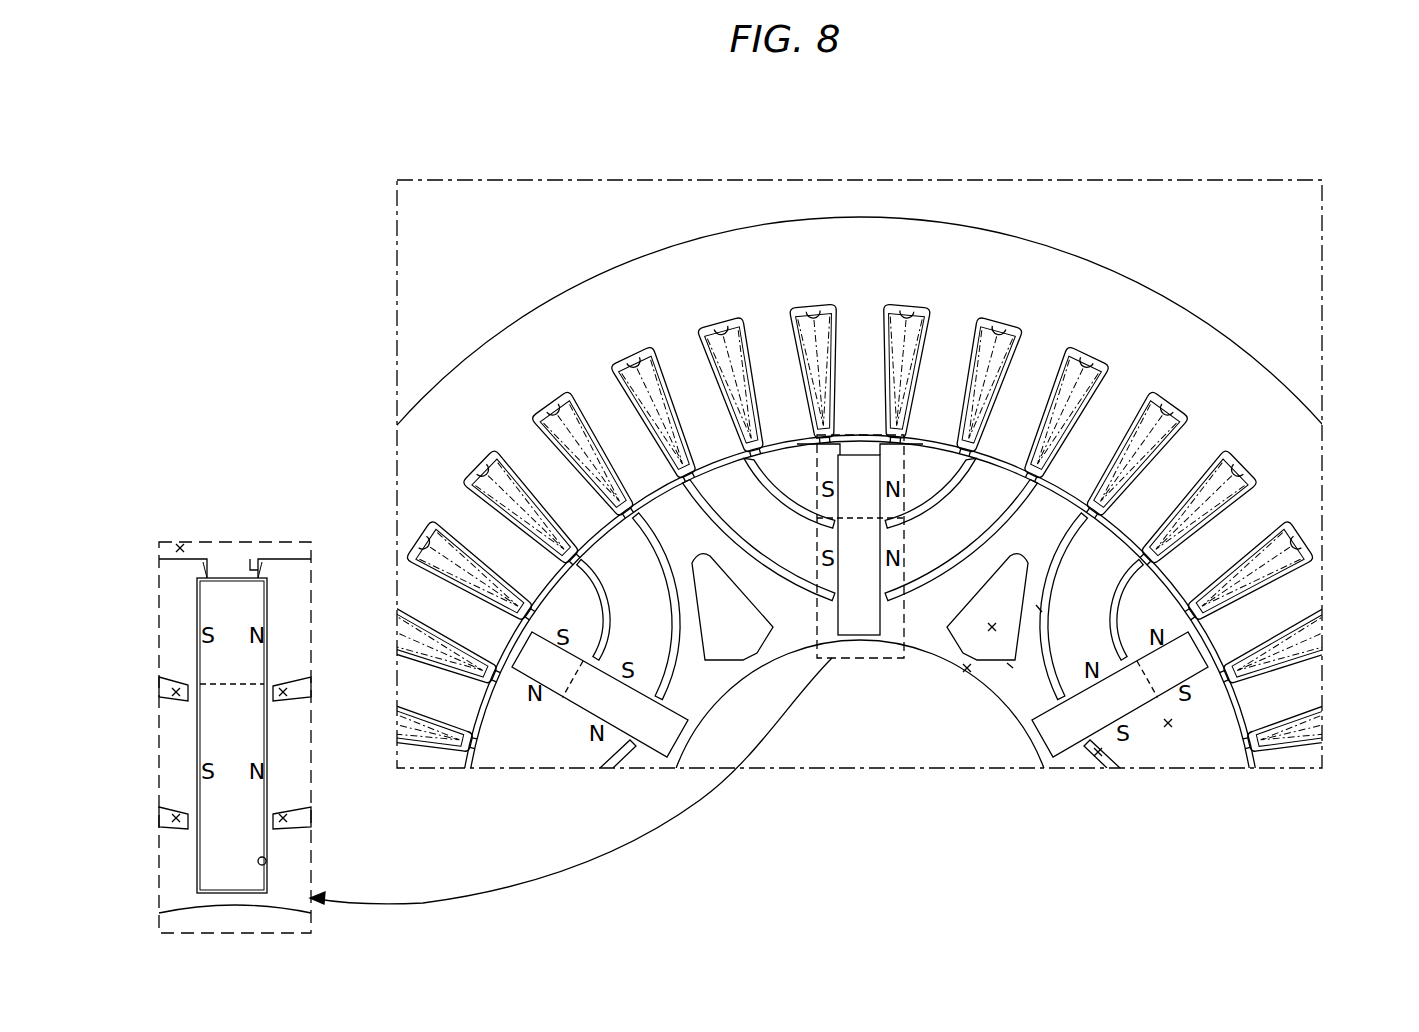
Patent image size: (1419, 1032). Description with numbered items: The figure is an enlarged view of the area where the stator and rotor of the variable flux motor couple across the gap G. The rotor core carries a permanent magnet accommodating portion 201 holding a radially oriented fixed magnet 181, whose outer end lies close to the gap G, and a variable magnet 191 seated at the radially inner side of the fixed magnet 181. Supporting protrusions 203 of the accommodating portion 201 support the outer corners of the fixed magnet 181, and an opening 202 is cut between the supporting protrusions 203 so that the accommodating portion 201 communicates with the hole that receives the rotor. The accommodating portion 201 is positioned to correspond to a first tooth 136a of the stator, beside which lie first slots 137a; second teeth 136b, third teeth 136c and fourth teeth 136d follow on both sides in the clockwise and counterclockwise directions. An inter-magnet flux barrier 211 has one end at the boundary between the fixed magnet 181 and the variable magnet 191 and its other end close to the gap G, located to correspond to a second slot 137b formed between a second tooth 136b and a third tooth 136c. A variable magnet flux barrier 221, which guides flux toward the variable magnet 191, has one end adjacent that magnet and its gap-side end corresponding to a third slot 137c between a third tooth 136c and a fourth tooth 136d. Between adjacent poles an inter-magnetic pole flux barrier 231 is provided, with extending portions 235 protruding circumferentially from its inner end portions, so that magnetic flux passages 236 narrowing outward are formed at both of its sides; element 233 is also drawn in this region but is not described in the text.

The first tooth 136a is at (408, 620).
The second tooth 136b is at (468, 517).
The third tooth 136c is at (537, 465).
The fourth tooth 136d is at (612, 420).
The first slot 137a is at (419, 540).
The second slot 137b is at (479, 466).
The third slot 137c is at (550, 405).
The fixed magnet 181 is at (240, 661).
The variable magnet 191 is at (240, 791).
The permanent magnet accommodating portion 201 is at (266, 862).
The opening 202 is at (250, 567).
The supporting protrusion 203 is at (202, 565).
The inter-magnet flux barrier 211 is at (170, 692).
The variable magnet flux barrier 221 is at (170, 818).
The inter-magnetic pole flux barrier 231 is at (995, 631).
The rotor core cutout 233 is at (967, 673).
The extending portion 235 is at (941, 630).
The magnetic flux passage 236 is at (1038, 608).
The gap G is at (170, 549).